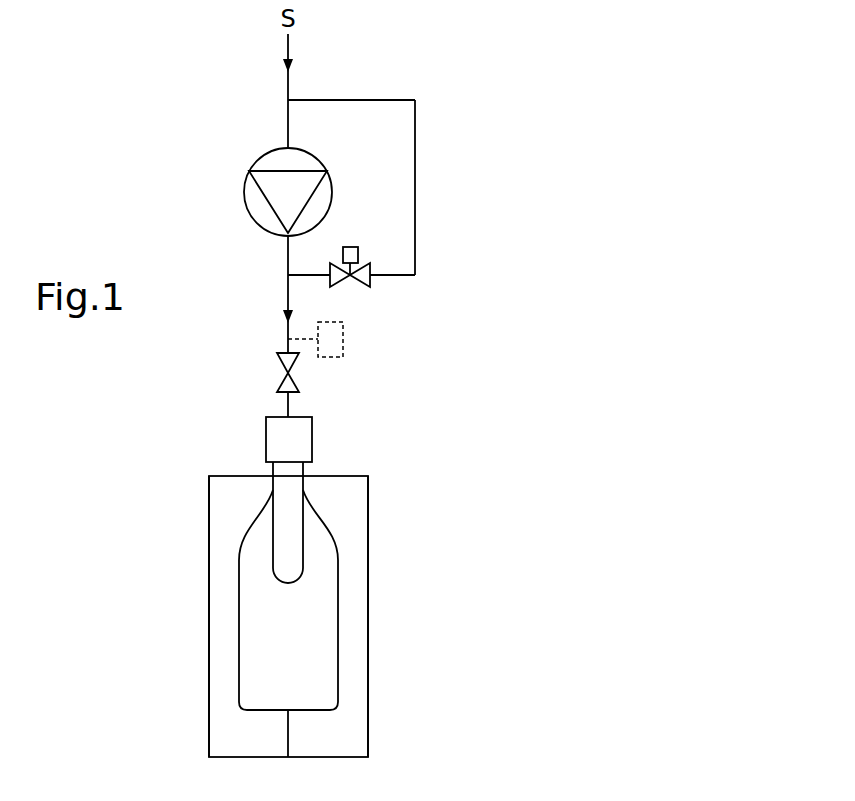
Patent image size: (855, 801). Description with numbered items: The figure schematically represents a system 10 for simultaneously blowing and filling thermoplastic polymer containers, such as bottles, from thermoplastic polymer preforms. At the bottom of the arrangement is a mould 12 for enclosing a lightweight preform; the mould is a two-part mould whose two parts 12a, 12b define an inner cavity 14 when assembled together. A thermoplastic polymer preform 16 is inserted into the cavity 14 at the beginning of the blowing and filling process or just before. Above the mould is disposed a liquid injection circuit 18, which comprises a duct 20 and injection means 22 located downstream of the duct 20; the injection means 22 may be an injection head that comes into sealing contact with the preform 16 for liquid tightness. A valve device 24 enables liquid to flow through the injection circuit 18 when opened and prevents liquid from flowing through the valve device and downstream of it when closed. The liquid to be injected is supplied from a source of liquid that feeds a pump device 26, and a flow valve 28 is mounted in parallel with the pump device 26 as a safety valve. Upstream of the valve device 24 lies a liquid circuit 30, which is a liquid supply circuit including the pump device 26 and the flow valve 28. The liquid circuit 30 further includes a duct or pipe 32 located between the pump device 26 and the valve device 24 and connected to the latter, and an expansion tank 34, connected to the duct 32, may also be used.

The system 10 is at (480, 121).
The mould 12 is at (403, 706).
The mould part 12a is at (224, 656).
The mould part 12b is at (357, 632).
The inner cavity 14 is at (250, 610).
The thermoplastic polymer preform 16 is at (297, 562).
The liquid injection circuit 18 is at (219, 420).
The duct 20 is at (290, 402).
The injection means 22 is at (314, 438).
The valve device 24 is at (281, 362).
The pump device 26 is at (222, 193).
The flow valve 28 is at (359, 295).
The liquid circuit 30 is at (262, 265).
The duct 32 is at (286, 331).
The expansion tank 34 is at (343, 333).